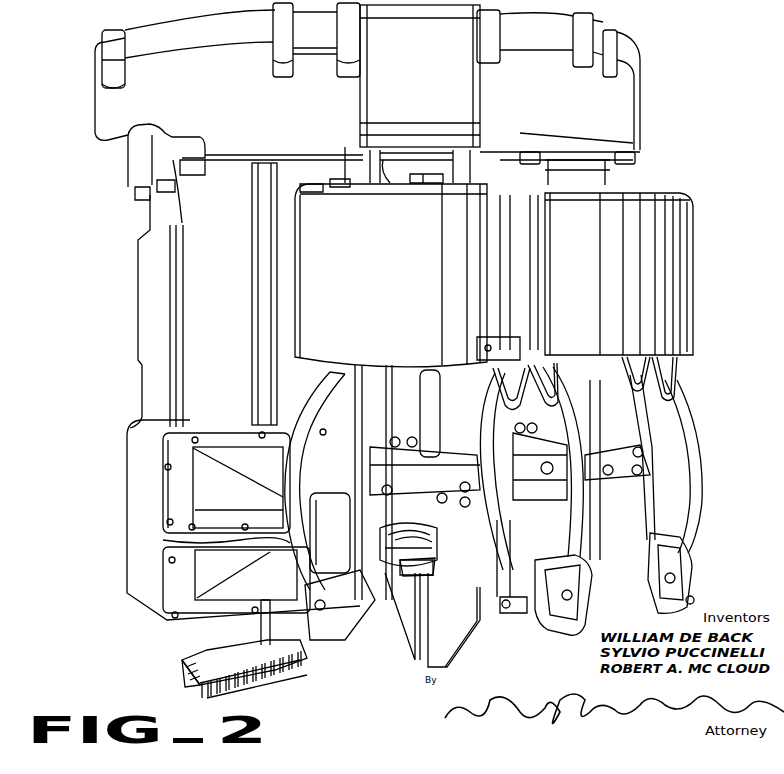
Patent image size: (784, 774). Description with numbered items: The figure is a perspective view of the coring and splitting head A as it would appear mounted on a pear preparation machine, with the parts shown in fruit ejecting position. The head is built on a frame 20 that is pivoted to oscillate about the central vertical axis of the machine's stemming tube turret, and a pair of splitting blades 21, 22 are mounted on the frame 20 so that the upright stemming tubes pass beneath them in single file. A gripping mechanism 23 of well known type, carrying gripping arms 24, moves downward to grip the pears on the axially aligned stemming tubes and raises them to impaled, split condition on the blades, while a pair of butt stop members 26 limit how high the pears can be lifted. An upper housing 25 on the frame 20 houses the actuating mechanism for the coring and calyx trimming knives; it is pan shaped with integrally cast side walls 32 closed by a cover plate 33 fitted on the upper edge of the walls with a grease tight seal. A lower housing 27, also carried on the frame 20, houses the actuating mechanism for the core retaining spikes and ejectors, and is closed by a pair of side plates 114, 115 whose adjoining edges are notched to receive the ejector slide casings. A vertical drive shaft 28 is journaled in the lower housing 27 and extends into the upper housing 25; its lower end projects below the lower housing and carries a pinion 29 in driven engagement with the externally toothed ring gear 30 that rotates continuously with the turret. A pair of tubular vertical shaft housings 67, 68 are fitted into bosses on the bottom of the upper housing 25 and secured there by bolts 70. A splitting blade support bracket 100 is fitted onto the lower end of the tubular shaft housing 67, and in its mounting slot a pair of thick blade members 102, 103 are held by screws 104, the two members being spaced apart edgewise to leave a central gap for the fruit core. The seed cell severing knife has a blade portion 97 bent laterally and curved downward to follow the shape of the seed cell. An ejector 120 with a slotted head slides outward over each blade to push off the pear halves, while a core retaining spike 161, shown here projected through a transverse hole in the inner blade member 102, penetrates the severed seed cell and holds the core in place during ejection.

The frame 20 is at (148, 397).
The splitting blade 21 is at (404, 648).
The splitting blade 22 is at (625, 518).
The gripping mechanism 23 is at (556, 365).
The gripping arms 24 is at (297, 487).
The upper housing 25 is at (642, 65).
The butt stop members 26 is at (432, 530).
The lower housing 27 is at (150, 462).
The vertical drive shaft 28 is at (258, 340).
The pinion 29 is at (270, 700).
The ring gear 30 is at (183, 663).
The side walls 32 is at (108, 103).
The cover plate 33 is at (104, 30).
The tubular vertical shaft housing 67 is at (400, 180).
The tubular vertical shaft housing 68 is at (612, 178).
The bolts 70 is at (475, 147).
The blade portion of seed cell severing knife 97 is at (430, 548).
The splitting blade support bracket 100 is at (436, 472).
The blade member 102 is at (410, 616).
The blade member 103 is at (464, 618).
The screws 104 is at (644, 450).
The side plate 114 is at (173, 582).
The side plate 115 is at (183, 510).
The ejector 120 is at (424, 577).
The core retaining spike 161 is at (433, 566).
The coring and splitting head A is at (157, 272).